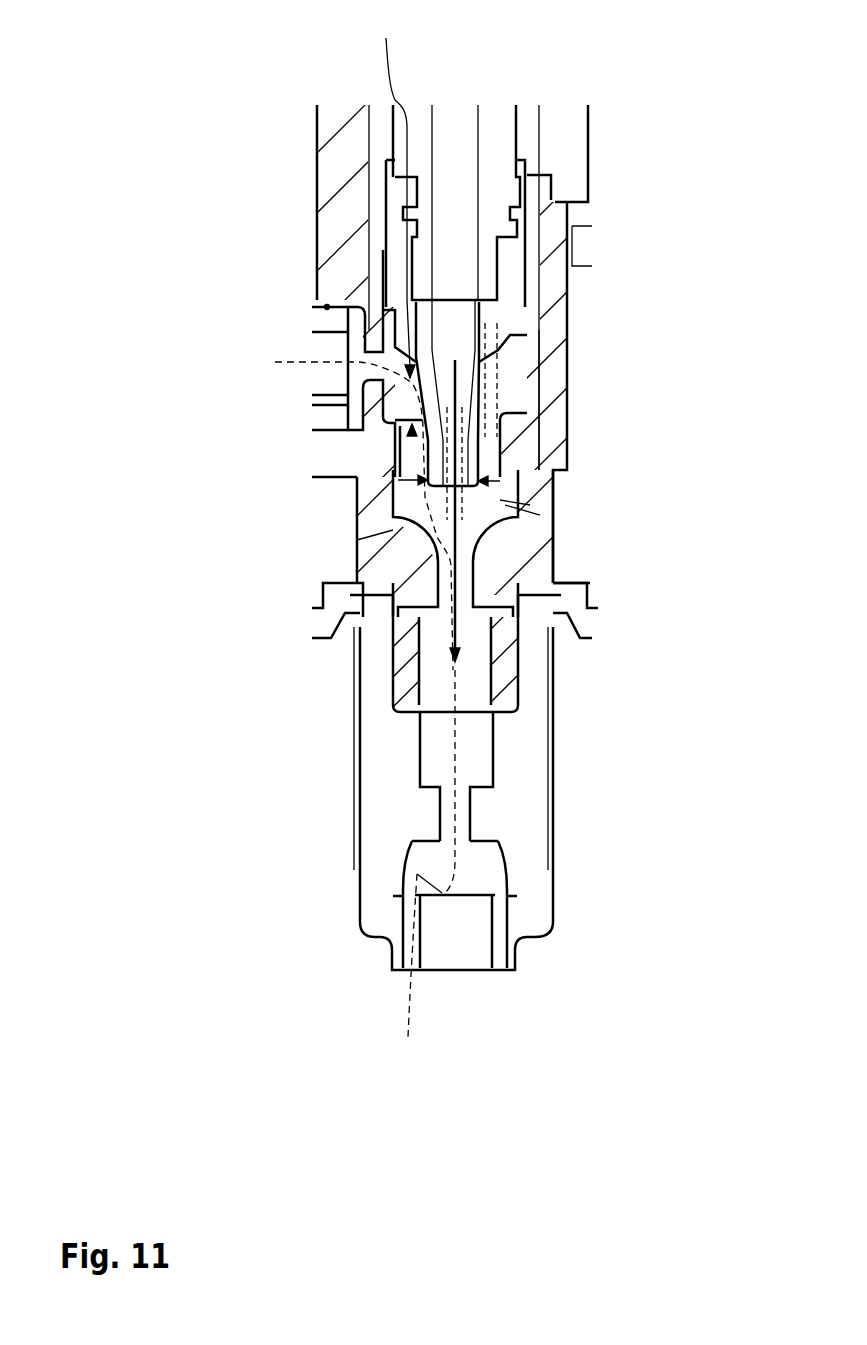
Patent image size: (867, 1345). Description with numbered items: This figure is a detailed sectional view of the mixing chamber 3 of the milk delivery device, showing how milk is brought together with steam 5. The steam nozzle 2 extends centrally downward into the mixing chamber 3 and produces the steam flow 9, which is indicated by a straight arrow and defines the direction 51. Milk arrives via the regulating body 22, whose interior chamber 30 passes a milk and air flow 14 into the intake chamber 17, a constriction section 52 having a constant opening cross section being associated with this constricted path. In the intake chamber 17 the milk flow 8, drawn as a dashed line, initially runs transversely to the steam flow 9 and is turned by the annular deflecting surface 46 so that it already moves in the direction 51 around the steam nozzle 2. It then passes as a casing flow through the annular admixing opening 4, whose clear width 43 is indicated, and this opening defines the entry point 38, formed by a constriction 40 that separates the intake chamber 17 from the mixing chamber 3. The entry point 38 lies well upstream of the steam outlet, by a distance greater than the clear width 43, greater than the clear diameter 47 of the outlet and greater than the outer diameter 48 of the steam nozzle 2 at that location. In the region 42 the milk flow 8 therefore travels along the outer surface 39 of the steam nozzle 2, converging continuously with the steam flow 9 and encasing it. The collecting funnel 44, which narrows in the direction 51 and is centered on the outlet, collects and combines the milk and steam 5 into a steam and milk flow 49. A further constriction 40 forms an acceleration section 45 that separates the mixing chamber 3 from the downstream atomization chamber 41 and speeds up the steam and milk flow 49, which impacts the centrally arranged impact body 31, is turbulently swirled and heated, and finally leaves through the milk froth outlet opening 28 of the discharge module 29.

The steam nozzle 2 is at (517, 295).
The mixing chamber 3 is at (360, 517).
The admixing opening 4 is at (553, 468).
The steam 5 is at (458, 213).
The milk flow 8 is at (293, 362).
The steam flow 9 is at (520, 525).
The milk and air flow 14 is at (300, 362).
The intake chamber 17 is at (513, 368).
The regulating body 22 is at (327, 305).
The milk froth outlet opening 28 is at (497, 957).
The discharge module 29 is at (535, 693).
The chamber 30 is at (325, 395).
The impact body 31 is at (448, 940).
The entry point 38 is at (357, 480).
The outer surface 39 is at (553, 475).
The constriction 40 is at (500, 403).
The atomization chamber 41 is at (490, 872).
The region 42 is at (360, 447).
The clear width 43 is at (490, 332).
The collecting funnel 44 is at (360, 540).
The acceleration section 45 is at (517, 613).
The deflecting surface 46 is at (360, 432).
The clear diameter 47 is at (505, 505).
The outer diameter 48 is at (500, 500).
The steam and milk flow 49 is at (453, 645).
The direction 51 is at (553, 583).
The constriction section 52 is at (393, 193).